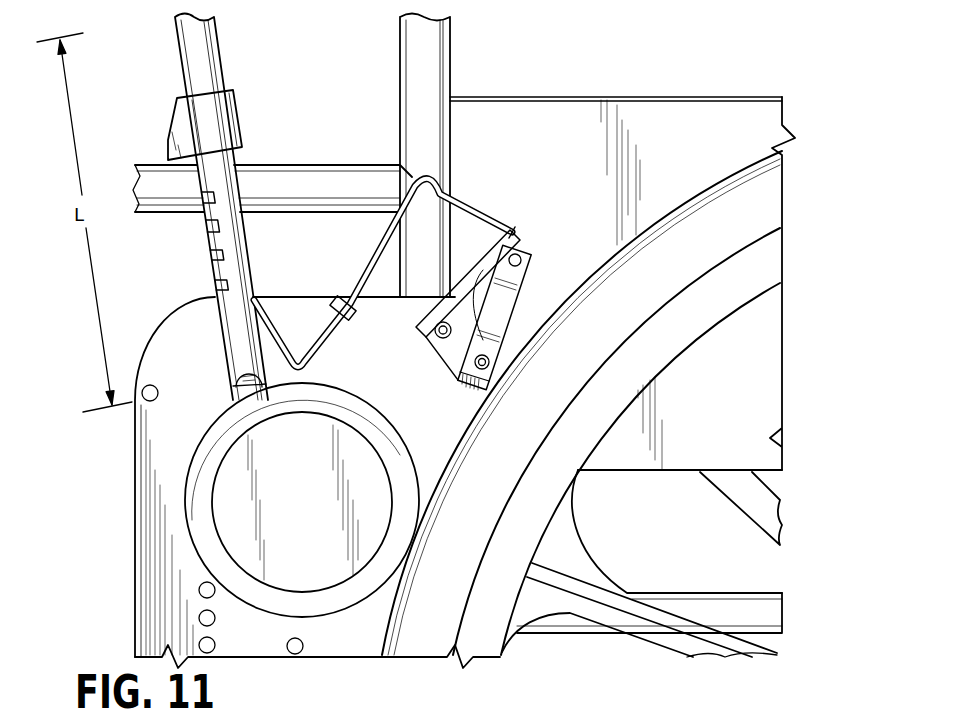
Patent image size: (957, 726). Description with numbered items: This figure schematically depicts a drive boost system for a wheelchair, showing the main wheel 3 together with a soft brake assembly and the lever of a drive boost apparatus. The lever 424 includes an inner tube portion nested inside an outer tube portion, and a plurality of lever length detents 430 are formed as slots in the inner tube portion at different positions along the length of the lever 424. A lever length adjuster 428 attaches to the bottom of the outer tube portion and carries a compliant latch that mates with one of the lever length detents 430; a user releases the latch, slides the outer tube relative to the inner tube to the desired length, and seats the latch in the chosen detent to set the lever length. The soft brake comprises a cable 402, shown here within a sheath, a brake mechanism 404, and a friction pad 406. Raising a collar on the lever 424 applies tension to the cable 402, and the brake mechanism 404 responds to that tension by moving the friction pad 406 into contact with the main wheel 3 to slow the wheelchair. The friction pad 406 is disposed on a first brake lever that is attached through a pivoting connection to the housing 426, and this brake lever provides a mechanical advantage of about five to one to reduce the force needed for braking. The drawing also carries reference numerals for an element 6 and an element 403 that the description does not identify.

The main wheel 3 is at (713, 202).
The frame member 6 is at (442, 76).
The cable 402 is at (360, 268).
The ring 403 is at (203, 552).
The brake mechanism 404 is at (515, 298).
The friction pad 406 is at (460, 388).
The lever 424 is at (220, 72).
The housing 426 is at (163, 470).
The lever length adjuster 428 is at (205, 127).
The lever length detents 430 is at (212, 227).